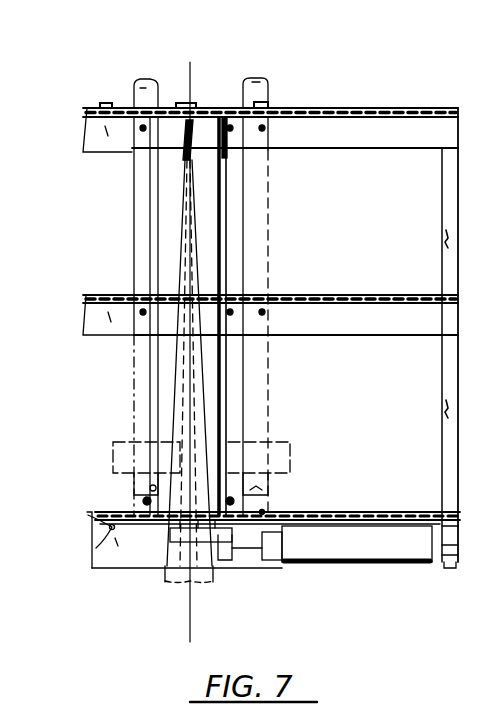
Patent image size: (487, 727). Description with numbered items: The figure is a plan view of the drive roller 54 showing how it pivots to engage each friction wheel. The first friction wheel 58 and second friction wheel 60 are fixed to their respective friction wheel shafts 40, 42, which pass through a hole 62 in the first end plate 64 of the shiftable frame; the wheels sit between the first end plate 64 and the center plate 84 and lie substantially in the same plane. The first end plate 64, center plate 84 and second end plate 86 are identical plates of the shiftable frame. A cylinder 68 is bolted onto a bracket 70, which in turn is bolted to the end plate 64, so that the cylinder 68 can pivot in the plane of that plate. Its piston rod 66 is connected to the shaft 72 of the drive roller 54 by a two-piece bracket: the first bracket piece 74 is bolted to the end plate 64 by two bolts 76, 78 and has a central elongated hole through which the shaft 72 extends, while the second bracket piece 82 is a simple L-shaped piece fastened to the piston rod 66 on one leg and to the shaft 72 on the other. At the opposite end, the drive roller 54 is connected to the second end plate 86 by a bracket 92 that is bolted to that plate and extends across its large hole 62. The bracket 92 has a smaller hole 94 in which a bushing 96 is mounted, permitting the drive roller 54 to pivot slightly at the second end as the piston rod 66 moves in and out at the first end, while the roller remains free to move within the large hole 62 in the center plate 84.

The friction wheel shaft 40 is at (132, 350).
The friction wheel shaft 42 is at (270, 360).
The drive roller 54 is at (224, 218).
The first friction wheel 58 is at (113, 446).
The second friction wheel 60 is at (288, 442).
The hole 62 is at (264, 132).
The first end plate 64 is at (396, 512).
The piston rod 66 is at (252, 554).
The cylinder 68 is at (410, 556).
The bracket 70 is at (450, 548).
The shaft 72 is at (178, 540).
The first bracket piece 74 is at (92, 522).
The bolt 76 is at (92, 548).
The bolt 78 is at (300, 528).
The second bracket piece 82 is at (223, 556).
The center plate 84 is at (352, 297).
The second end plate 86 is at (342, 110).
The bracket 92 is at (288, 116).
The smaller hole 94 is at (208, 112).
The bushing 96 is at (176, 108).